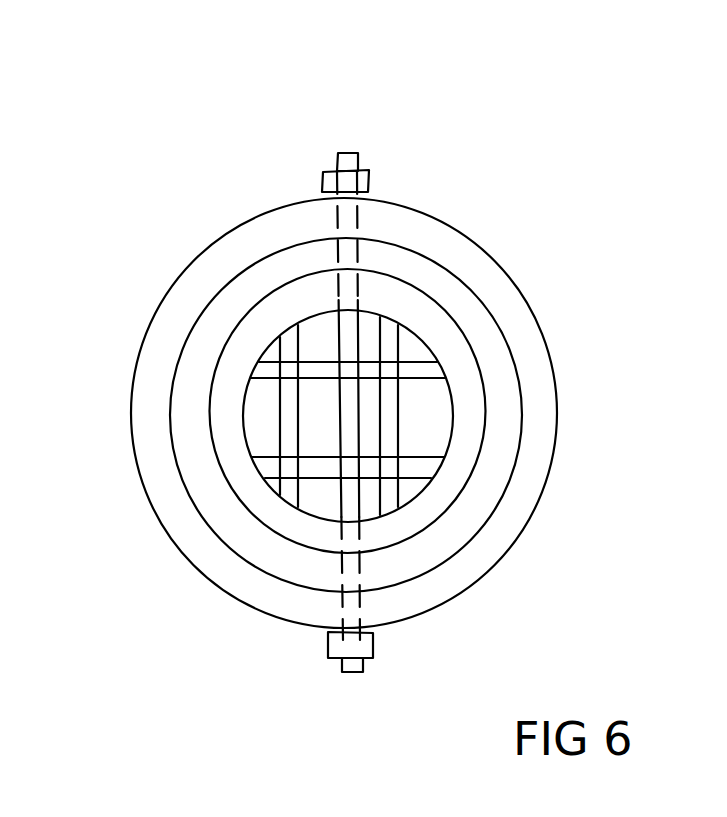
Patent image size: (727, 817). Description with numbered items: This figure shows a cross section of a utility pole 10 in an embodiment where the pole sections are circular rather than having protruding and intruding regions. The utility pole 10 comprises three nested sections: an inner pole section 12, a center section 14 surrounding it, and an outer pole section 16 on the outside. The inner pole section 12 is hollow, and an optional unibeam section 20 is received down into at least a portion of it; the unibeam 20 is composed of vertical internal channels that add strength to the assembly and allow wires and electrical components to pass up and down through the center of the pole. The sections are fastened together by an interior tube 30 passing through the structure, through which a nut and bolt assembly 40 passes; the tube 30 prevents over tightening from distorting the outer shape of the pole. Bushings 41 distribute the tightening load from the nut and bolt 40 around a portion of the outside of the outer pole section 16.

The utility pole 10 is at (158, 107).
The inner pole section 12 is at (225, 413).
The center section 14 is at (190, 362).
The outer pole section 16 is at (178, 303).
The unibeam section 20 is at (310, 368).
The interior tube 30 is at (362, 426).
The nut and bolt assembly 40 is at (347, 152).
The bushings 41 is at (370, 178).